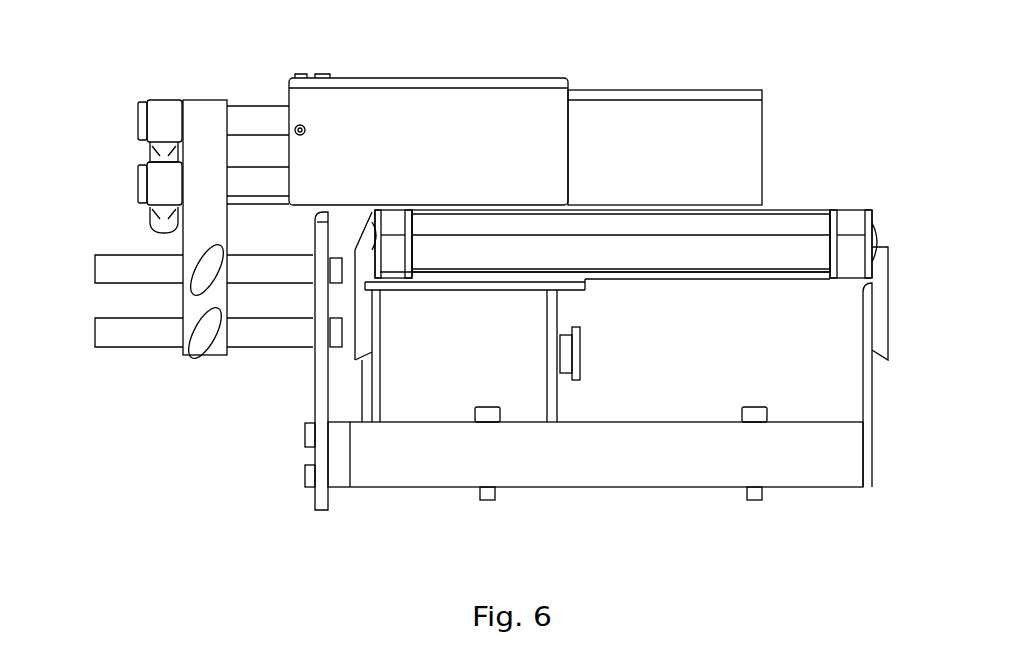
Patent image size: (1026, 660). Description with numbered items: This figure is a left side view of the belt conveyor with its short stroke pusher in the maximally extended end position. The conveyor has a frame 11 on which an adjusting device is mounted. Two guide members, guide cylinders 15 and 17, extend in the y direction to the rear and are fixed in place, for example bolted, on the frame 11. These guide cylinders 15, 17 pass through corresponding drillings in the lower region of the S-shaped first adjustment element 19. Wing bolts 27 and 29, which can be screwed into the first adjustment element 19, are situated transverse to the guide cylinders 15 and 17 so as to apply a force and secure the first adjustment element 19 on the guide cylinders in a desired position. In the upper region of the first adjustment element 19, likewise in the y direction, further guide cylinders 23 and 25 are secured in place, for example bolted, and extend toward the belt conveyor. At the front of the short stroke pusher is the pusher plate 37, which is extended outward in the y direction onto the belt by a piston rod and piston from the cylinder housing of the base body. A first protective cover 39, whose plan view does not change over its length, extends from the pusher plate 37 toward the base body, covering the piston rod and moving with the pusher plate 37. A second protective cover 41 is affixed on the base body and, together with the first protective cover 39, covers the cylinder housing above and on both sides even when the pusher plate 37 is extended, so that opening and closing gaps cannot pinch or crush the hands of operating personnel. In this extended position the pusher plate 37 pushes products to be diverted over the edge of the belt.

The frame 11 is at (315, 402).
The guide cylinder 15 is at (288, 345).
The guide cylinder 17 is at (290, 283).
The first adjustment element 19 is at (155, 258).
The guide cylinder 23 is at (228, 107).
The guide cylinder 25 is at (275, 107).
The wing bolt 27 is at (184, 352).
The wing bolt 29 is at (185, 290).
The pusher plate 37 is at (763, 140).
The first protective cover 39 is at (680, 92).
The second protective cover 41 is at (423, 80).